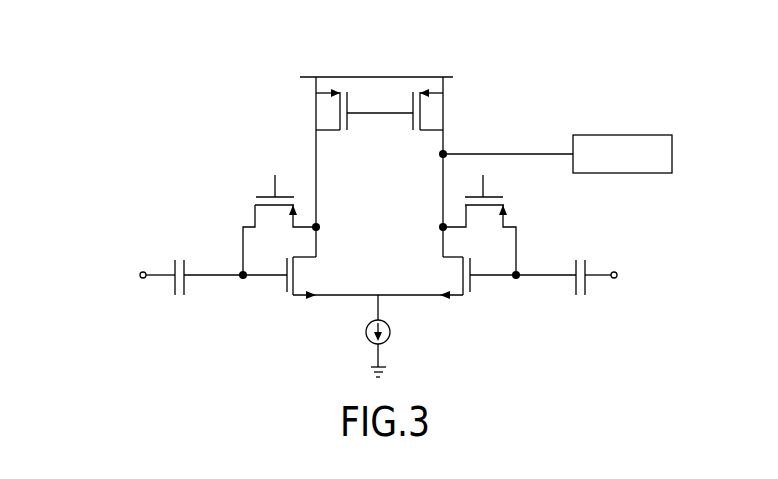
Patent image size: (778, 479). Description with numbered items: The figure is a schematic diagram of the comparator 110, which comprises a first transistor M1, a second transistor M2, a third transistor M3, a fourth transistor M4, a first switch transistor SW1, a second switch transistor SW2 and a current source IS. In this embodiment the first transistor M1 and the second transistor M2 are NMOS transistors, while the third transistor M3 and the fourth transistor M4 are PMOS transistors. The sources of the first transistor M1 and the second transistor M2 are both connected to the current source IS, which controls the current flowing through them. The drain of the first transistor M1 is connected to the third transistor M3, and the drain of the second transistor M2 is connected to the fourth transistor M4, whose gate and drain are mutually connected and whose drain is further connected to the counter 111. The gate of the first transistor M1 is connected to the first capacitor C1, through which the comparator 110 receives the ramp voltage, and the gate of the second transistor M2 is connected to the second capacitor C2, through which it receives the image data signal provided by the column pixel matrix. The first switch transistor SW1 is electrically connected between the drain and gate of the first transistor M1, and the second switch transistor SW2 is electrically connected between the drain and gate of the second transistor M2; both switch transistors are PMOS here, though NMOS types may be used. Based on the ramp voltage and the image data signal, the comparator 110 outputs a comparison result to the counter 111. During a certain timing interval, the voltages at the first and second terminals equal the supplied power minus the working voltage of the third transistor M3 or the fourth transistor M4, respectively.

The comparator 110 is at (85, 24).
The counter 111 is at (620, 135).
The first transistor M1 is at (332, 278).
The second transistor M2 is at (424, 278).
The third transistor M3 is at (355, 167).
The fourth transistor M4 is at (439, 167).
The first switch transistor SW1 is at (279, 225).
The second switch transistor SW2 is at (479, 225).
The first capacitor C1 is at (177, 294).
The second capacitor C2 is at (580, 294).
The current source IS is at (391, 336).